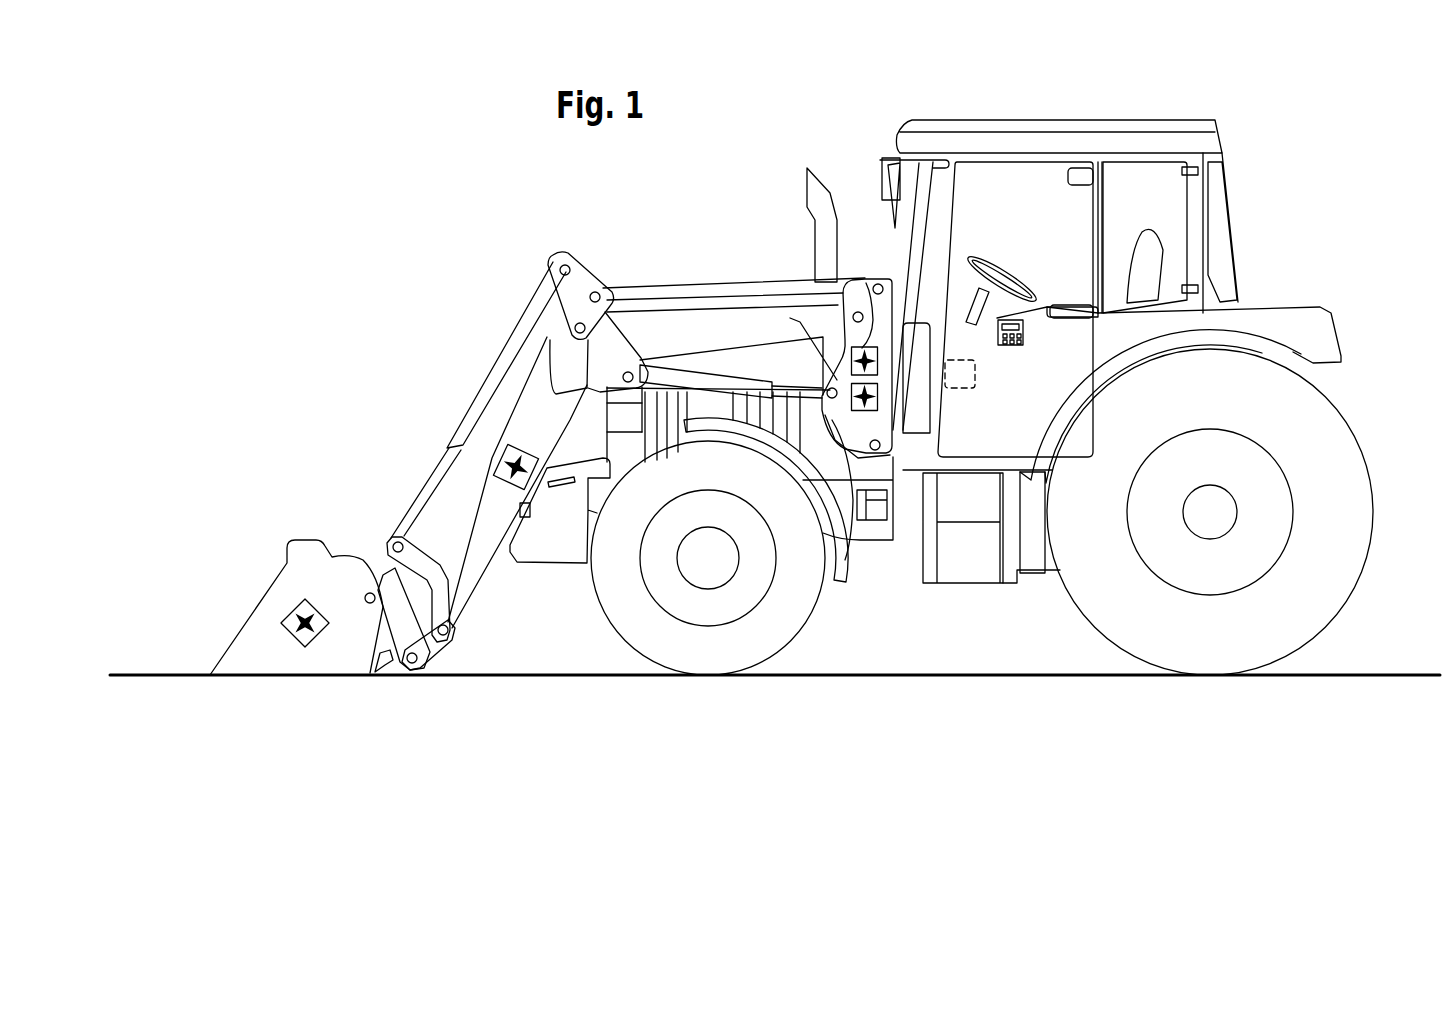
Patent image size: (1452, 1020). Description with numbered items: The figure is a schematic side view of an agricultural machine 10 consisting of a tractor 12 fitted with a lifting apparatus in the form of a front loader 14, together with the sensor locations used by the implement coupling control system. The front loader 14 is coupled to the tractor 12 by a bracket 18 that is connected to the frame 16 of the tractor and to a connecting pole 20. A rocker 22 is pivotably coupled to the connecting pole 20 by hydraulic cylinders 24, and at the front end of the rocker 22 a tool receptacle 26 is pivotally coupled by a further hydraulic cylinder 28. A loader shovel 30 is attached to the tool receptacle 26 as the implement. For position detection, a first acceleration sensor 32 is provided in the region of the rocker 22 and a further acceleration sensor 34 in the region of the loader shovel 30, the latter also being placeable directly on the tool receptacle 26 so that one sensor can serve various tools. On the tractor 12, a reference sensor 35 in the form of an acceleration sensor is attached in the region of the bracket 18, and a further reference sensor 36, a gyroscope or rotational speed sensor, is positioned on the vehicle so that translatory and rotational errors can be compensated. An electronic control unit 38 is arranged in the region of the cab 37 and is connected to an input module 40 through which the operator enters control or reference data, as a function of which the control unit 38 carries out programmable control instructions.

The agricultural machine 10 is at (759, 186).
The tractor 12 is at (868, 480).
The front loader 14 is at (630, 327).
The frame 16 is at (852, 515).
The bracket 18 is at (897, 547).
The connecting pole 20 is at (790, 318).
The rocker 22 is at (562, 353).
The hydraulic cylinders 24 is at (673, 383).
The tool receptacle 26 is at (347, 560).
The further hydraulic cylinder 28 is at (478, 410).
The loader shovel 30 is at (268, 668).
The first acceleration sensor 32 is at (488, 540).
The further acceleration sensor 34 is at (304, 598).
The reference sensor 35 is at (863, 285).
The further reference sensor 36 is at (868, 407).
The cab 37 is at (1025, 182).
The electronic control unit 38 is at (960, 375).
The input module 40 is at (1022, 318).